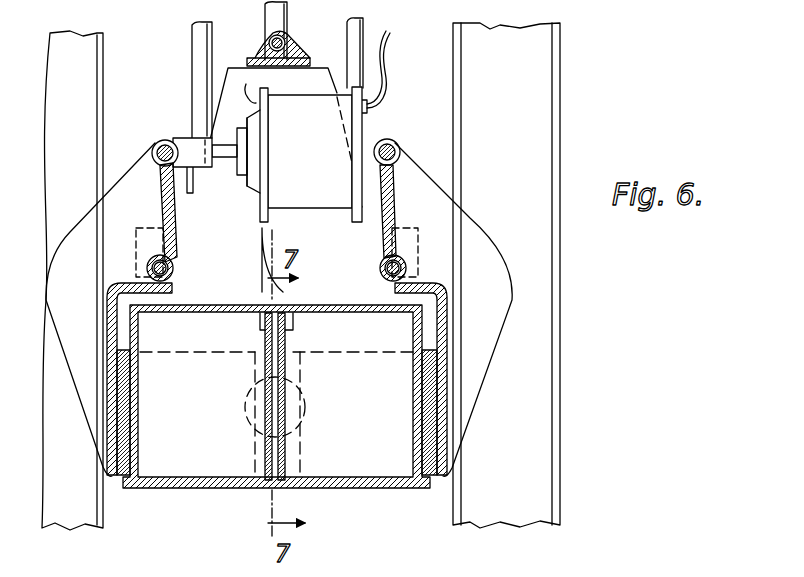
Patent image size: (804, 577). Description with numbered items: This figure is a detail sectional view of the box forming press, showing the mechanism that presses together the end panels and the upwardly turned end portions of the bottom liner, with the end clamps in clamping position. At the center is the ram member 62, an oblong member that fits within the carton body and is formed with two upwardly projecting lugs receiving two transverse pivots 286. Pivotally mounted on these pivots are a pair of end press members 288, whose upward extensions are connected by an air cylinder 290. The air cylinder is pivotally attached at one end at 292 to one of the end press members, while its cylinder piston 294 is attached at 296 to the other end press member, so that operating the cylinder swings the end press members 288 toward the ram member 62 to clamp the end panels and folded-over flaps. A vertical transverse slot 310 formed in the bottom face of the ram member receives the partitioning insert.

The ram member 62 is at (413, 457).
The transverse pivots 286 is at (147, 267).
The end press members 288 is at (80, 428).
The air cylinder 290 is at (332, 198).
The pivotal attachment of air cylinder 292 is at (393, 142).
The cylinder piston 294 is at (227, 157).
The piston attachment 296 is at (172, 124).
The vertical transverse slot 310 is at (287, 450).